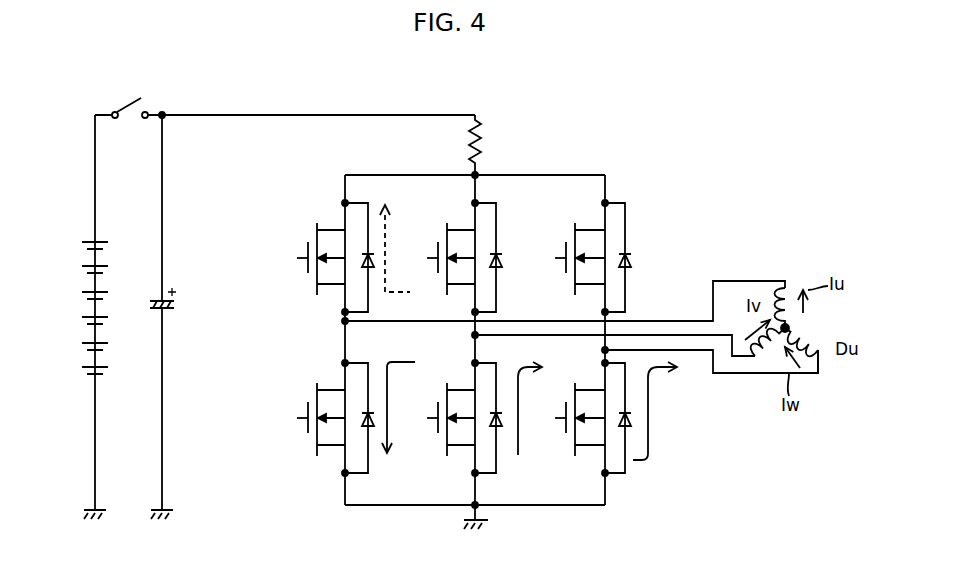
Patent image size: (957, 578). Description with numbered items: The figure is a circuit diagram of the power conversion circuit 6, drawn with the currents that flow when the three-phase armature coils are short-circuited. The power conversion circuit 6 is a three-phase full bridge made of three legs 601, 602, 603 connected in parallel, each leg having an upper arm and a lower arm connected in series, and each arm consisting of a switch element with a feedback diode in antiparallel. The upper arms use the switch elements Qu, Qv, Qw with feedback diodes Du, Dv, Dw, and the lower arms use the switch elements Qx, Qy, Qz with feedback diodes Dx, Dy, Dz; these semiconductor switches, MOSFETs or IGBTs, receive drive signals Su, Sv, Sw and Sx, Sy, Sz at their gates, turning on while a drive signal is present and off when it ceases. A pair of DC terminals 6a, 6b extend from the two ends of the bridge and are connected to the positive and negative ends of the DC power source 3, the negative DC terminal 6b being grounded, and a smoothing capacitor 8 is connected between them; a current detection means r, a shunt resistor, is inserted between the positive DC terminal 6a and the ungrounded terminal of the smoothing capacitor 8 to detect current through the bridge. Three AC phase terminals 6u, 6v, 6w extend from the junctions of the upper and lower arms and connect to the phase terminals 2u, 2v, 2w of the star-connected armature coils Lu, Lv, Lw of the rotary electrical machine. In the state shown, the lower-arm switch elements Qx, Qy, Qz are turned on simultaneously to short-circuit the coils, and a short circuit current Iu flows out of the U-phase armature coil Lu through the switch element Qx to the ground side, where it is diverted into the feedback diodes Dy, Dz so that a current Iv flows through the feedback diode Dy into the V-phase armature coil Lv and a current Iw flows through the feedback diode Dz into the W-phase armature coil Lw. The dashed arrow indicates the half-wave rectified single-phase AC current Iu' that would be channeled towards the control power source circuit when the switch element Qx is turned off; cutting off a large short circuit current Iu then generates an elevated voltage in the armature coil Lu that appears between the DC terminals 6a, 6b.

The DC power source 3 is at (89, 230).
The smoothing capacitor 8 is at (170, 312).
The current detection means r is at (480, 138).
The power conversion circuit 6 is at (468, 327).
The positive DC terminal 6a is at (479, 173).
The negative DC terminal 6b is at (472, 508).
The leg 601 is at (341, 318).
The leg 602 is at (466, 318).
The leg 603 is at (596, 328).
The AC phase terminal 6u is at (348, 322).
The AC phase terminal 6v is at (474, 338).
The AC phase terminal 6w is at (603, 351).
The switch element Qu is at (311, 257).
The switch element Qv is at (441, 257).
The switch element Qw is at (569, 257).
The switch element Qx is at (311, 427).
The switch element Qy is at (441, 427).
The switch element Qz is at (570, 427).
The drive signal Su is at (291, 259).
The drive signal Sv is at (421, 259).
The drive signal Sw is at (548, 259).
The drive signal Sx is at (291, 419).
The drive signal Sy is at (421, 419).
The drive signal Sz is at (549, 419).
The feedback diode Du is at (372, 268).
The feedback diode Dv is at (500, 262).
The feedback diode Dw is at (630, 262).
The feedback diode Dx is at (371, 427).
The feedback diode Dy is at (498, 427).
The feedback diode Dz is at (628, 427).
The half-wave rectified single-phase AC current Iu' is at (391, 219).
The short circuit current Iu is at (398, 391).
The current Iv is at (519, 370).
The current Iw is at (642, 461).
The U-phase armature coil Lu is at (789, 293).
The V-phase armature coil Lv is at (764, 357).
The W-phase armature coil Lw is at (805, 338).
The phase terminal 2u is at (785, 280).
The phase terminal 2v is at (742, 358).
The phase terminal 2w is at (816, 372).